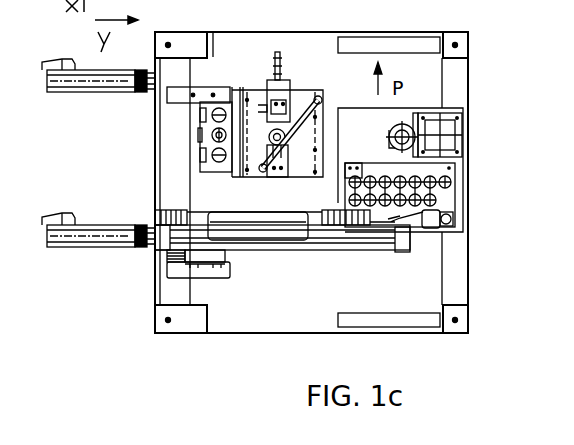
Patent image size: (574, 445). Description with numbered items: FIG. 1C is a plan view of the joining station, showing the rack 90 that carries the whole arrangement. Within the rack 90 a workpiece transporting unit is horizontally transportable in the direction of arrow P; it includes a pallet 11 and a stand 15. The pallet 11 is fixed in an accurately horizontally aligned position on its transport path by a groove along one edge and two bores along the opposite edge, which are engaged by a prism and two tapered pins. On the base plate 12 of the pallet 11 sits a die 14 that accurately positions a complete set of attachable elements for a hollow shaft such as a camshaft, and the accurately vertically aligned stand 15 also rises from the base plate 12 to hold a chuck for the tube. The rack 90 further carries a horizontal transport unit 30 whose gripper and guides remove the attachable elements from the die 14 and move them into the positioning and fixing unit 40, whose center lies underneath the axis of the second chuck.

The pallet 11 is at (410, 108).
The base plate 12 is at (457, 183).
The die 14 is at (445, 207).
The stand 15 is at (447, 130).
The horizontal transport unit 30 is at (335, 257).
The positioning and fixing unit 40 is at (289, 193).
The rack 90 is at (160, 268).